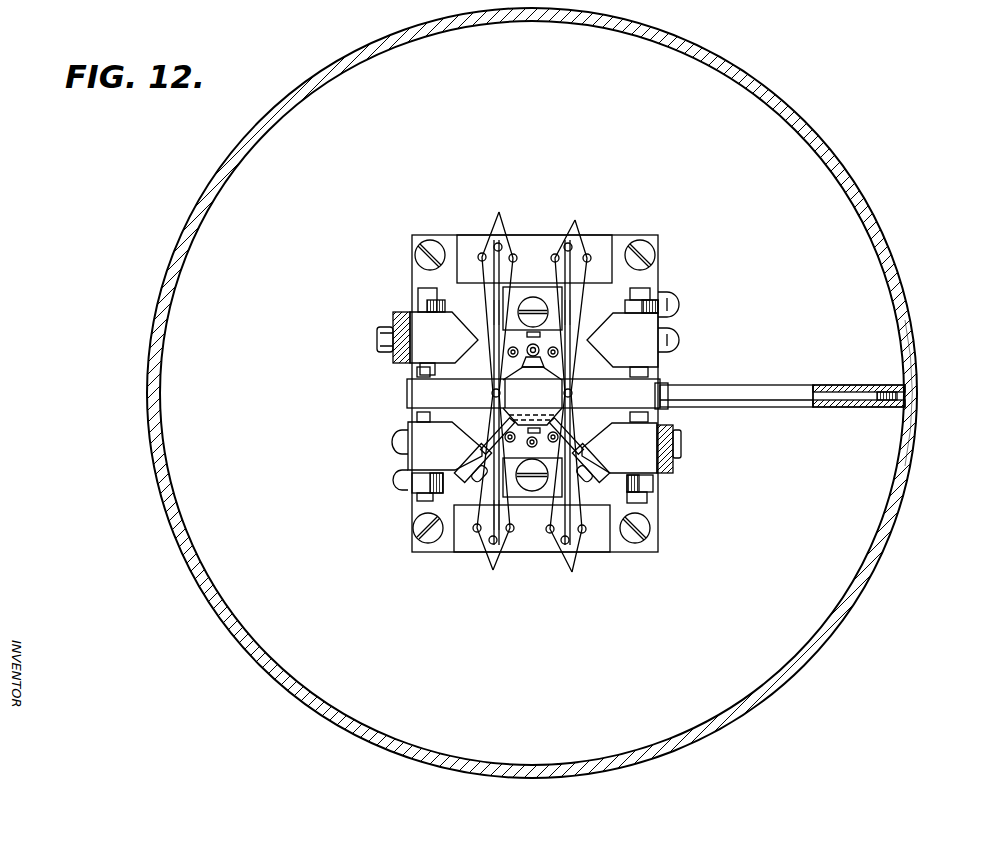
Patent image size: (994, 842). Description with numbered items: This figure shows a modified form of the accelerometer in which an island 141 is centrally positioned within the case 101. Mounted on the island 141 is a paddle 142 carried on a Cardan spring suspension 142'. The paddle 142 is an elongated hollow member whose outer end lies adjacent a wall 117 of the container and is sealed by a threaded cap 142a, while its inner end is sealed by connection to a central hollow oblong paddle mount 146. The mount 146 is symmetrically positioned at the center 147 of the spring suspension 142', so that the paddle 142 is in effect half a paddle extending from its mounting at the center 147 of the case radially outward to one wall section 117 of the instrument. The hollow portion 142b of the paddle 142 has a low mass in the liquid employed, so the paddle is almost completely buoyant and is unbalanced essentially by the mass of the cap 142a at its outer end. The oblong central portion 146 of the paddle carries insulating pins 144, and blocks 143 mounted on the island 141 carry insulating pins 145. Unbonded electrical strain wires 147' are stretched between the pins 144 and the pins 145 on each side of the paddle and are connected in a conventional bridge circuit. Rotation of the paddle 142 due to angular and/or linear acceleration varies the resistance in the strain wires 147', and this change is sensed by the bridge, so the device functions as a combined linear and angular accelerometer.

The case 101 is at (847, 164).
The wall 117 is at (910, 377).
The island 141 is at (668, 281).
The paddle 142 is at (736, 379).
The threaded cap 142a is at (878, 406).
The hollow portion 142b is at (830, 385).
The Cardan spring suspension 142' is at (547, 452).
The blocks 143 is at (622, 226).
The insulating pins 144 is at (490, 394).
The insulating pins 145 is at (530, 392).
The paddle mount 146 is at (656, 397).
The center 147 is at (521, 515).
The strain wires 147' is at (540, 307).